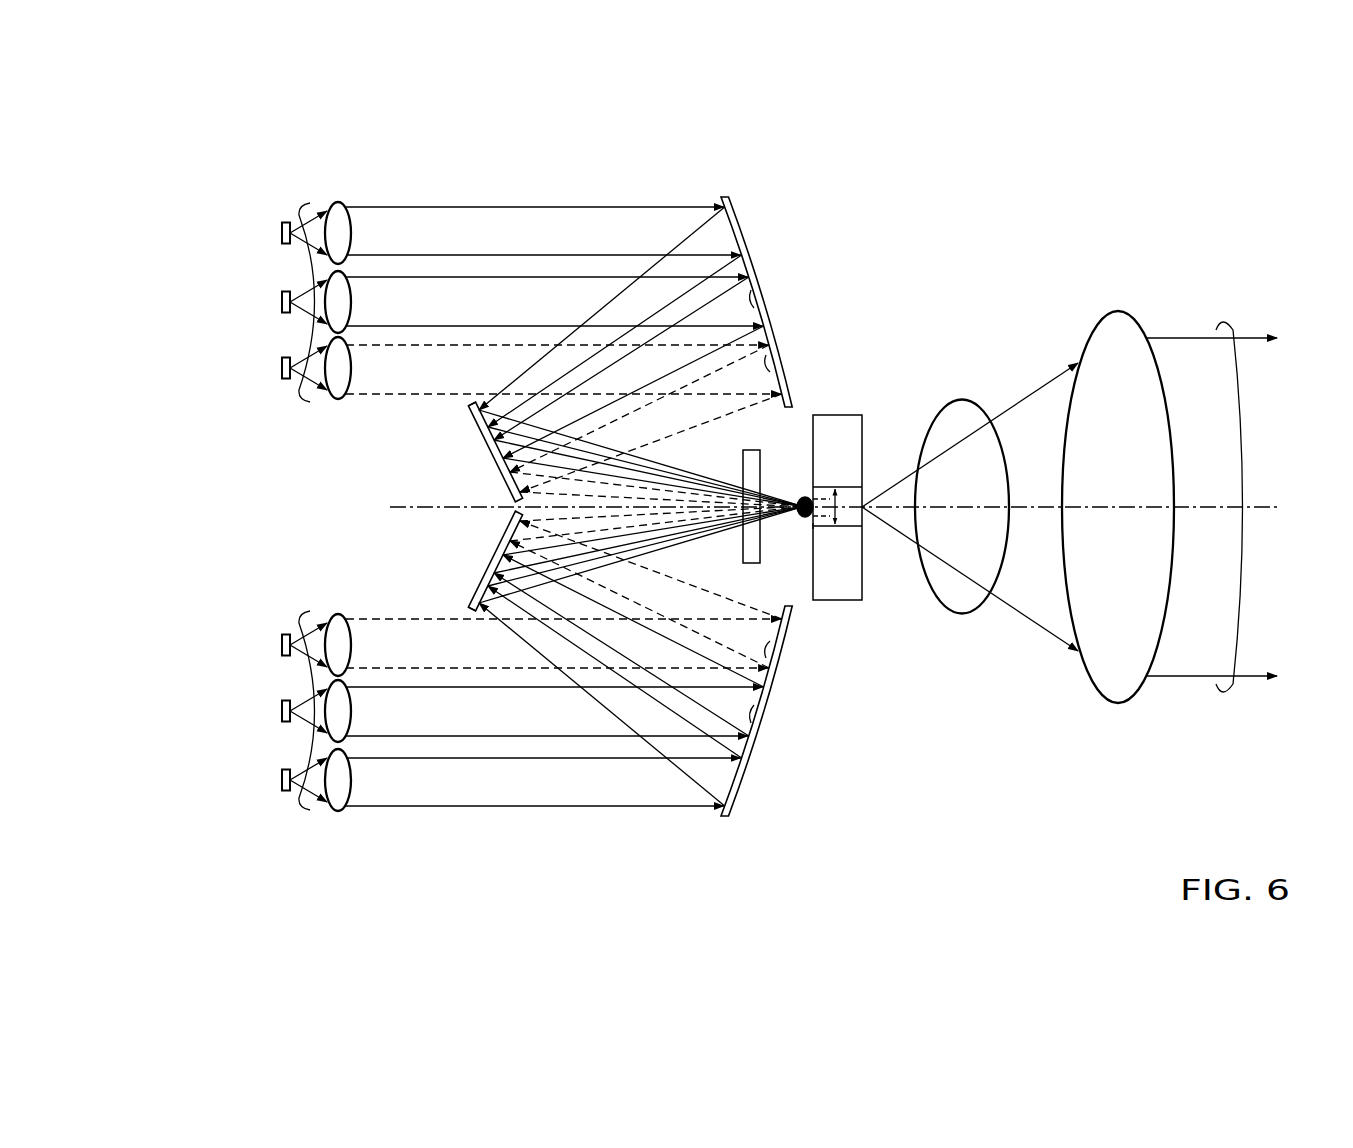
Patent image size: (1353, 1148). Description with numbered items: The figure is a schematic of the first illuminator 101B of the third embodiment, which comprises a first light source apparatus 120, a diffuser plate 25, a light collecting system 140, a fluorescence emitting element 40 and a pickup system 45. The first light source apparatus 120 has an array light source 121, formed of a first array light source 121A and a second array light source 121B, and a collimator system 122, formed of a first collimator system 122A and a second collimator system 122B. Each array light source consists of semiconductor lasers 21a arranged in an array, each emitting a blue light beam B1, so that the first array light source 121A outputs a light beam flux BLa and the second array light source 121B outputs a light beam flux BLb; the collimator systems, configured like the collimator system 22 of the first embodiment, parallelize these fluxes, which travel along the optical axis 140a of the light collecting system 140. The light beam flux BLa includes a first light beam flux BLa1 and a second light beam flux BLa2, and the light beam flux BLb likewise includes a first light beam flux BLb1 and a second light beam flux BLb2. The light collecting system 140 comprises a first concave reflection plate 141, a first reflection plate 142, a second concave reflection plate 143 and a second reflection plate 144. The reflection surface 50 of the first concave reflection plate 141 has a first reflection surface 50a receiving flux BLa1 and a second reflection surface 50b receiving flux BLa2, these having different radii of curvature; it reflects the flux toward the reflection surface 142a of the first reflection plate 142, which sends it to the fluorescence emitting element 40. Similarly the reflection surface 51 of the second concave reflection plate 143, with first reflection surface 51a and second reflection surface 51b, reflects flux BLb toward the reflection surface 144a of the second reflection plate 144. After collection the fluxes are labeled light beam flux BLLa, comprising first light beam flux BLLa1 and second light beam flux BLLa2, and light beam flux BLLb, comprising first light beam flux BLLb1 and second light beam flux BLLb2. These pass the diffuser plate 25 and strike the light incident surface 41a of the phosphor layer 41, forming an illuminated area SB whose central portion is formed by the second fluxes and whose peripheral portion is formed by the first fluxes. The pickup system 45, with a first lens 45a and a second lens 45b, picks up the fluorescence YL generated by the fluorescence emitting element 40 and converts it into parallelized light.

The first illuminator 101B is at (997, 246).
The first light source apparatus 120 is at (208, 643).
The array light source 121 is at (146, 427).
The first array light source 121A is at (252, 386).
The second array light source 121B is at (252, 626).
The semiconductor laser 21a is at (283, 229).
The collimator system 122 is at (249, 475).
The first collimator system 122A is at (332, 414).
The second collimator system 122B is at (332, 600).
The collimator system 22 is at (338, 201).
The blue light beam B1 is at (292, 215).
The light beam flux BLa is at (312, 199).
The first light beam flux BLa1 is at (405, 400).
The second light beam flux BLa2 is at (405, 330).
The light beam flux BLLa is at (677, 156).
The first light beam flux BLLa1 is at (605, 445).
The second light beam flux BLLa2 is at (592, 440).
The light beam flux BLb is at (312, 815).
The first light beam flux BLb1 is at (405, 613).
The second light beam flux BLb2 is at (405, 683).
The light beam flux BLLb is at (677, 859).
The first light beam flux BLLb1 is at (605, 568).
The second light beam flux BLLb2 is at (592, 573).
The light collecting system 140 is at (757, 198).
The optical axis 140a is at (415, 507).
The first concave reflection plate 141 is at (744, 242).
The first reflection plate 142 is at (506, 479).
The reflection surface 142a is at (470, 405).
The second concave reflection plate 143 is at (750, 776).
The second reflection plate 144 is at (506, 535).
The reflection surface 144a is at (470, 608).
The reflection surface 50 is at (867, 277).
The first reflection surface 50a is at (778, 348).
The second reflection surface 50b is at (775, 297).
The reflection surface 51 is at (867, 653).
The first reflection surface 51a is at (775, 665).
The second reflection surface 51b is at (772, 716).
The diffuser plate 25 is at (752, 456).
The fluorescence emitting element 40 is at (882, 582).
The phosphor layer 41 is at (855, 518).
The light incident surface 41a is at (813, 526).
The illuminated area SB is at (843, 497).
The pickup system 45 is at (1090, 780).
The first lens 45a is at (972, 604).
The second lens 45b is at (1103, 673).
The fluorescence YL is at (1236, 330).